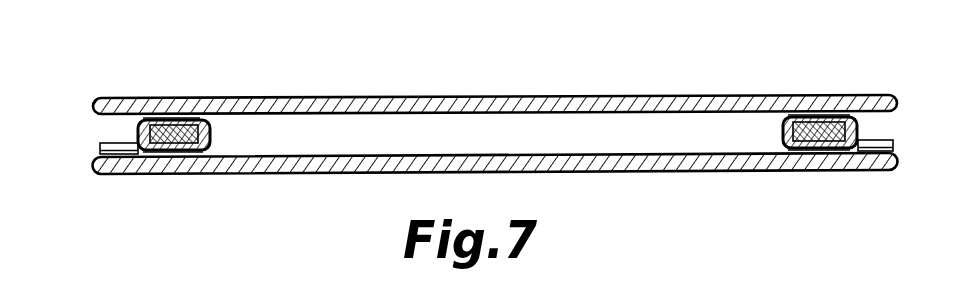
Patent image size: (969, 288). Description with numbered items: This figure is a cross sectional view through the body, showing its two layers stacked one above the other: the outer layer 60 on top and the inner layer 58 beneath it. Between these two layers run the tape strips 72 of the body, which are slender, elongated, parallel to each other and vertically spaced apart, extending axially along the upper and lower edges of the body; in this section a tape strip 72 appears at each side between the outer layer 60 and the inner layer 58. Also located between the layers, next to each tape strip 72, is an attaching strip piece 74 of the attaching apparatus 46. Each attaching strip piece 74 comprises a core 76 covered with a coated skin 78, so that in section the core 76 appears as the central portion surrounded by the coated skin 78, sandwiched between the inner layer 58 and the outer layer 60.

The attaching apparatus 46 is at (206, 90).
The inner layer 58 is at (253, 177).
The outer layer 60 is at (366, 93).
The tape strips 72 is at (93, 151).
The attaching strip piece 74 is at (206, 90).
The core 76 is at (177, 123).
The coated skin 78 is at (137, 133).